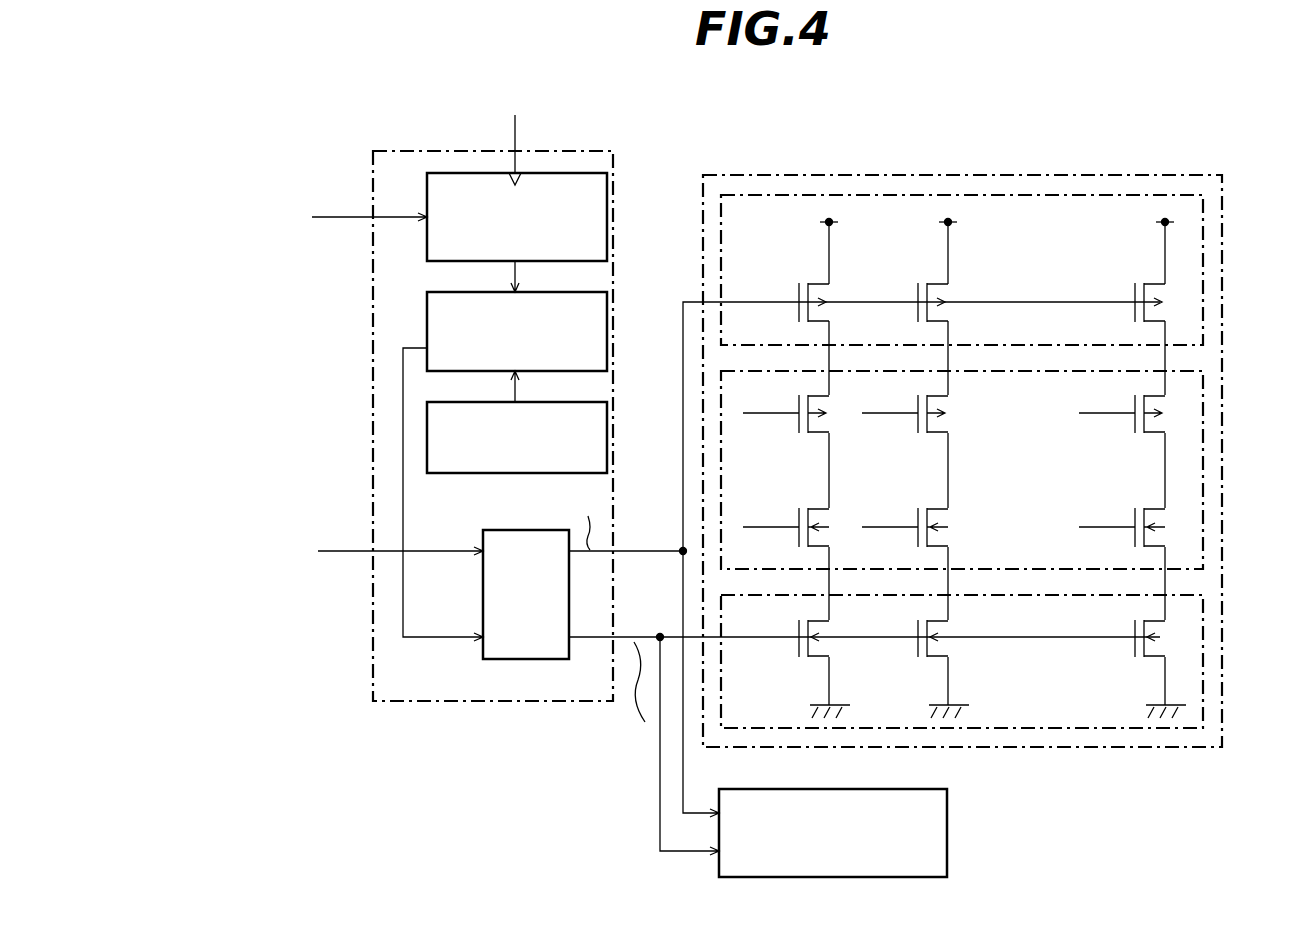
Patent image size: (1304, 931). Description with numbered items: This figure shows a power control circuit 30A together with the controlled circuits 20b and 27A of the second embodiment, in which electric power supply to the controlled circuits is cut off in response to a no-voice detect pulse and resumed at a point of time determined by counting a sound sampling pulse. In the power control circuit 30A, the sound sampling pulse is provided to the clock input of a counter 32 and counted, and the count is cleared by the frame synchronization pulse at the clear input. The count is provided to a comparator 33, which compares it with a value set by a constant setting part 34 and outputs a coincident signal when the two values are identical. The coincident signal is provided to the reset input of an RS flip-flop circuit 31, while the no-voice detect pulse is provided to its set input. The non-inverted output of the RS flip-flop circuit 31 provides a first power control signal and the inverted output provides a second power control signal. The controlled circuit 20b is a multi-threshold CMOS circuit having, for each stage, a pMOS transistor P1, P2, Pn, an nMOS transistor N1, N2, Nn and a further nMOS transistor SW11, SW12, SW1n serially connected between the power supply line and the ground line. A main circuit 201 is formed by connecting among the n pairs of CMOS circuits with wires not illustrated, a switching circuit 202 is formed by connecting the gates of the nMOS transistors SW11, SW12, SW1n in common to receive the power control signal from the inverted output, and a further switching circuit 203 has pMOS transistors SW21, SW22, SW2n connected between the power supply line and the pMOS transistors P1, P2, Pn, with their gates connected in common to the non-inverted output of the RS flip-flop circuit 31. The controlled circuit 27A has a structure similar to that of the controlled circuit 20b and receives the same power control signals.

The power control circuit 30A is at (390, 150).
The RS flip-flop circuit 31 is at (483, 656).
The counter 32 is at (427, 189).
The comparator 33 is at (427, 292).
The constant setting part 34 is at (461, 474).
The controlled circuit 20b is at (857, 175).
The main circuit 201 is at (1203, 432).
The switching circuit 202 is at (1203, 650).
The switching circuit 203 is at (1203, 262).
The controlled circuit 27A is at (948, 825).
The pMOS transistor SW21 is at (819, 283).
The pMOS transistor SW22 is at (938, 283).
The pMOS transistor SW2n is at (1154, 283).
The pMOS transistor P1 is at (818, 435).
The pMOS transistor P2 is at (937, 435).
The pMOS transistor Pn is at (1154, 435).
The nMOS transistor N1 is at (818, 508).
The nMOS transistor N2 is at (937, 508).
The nMOS transistor Nn is at (1154, 508).
The nMOS transistor SW11 is at (818, 657).
The nMOS transistor SW12 is at (937, 657).
The nMOS transistor SW1n is at (1154, 657).